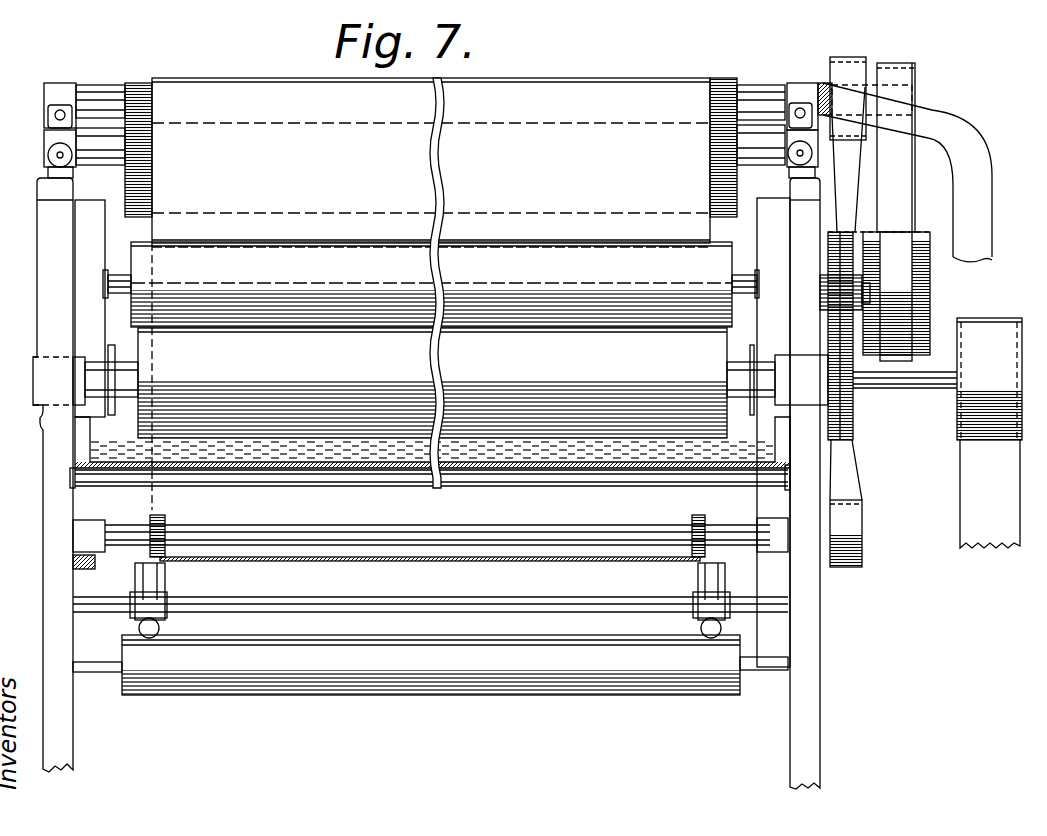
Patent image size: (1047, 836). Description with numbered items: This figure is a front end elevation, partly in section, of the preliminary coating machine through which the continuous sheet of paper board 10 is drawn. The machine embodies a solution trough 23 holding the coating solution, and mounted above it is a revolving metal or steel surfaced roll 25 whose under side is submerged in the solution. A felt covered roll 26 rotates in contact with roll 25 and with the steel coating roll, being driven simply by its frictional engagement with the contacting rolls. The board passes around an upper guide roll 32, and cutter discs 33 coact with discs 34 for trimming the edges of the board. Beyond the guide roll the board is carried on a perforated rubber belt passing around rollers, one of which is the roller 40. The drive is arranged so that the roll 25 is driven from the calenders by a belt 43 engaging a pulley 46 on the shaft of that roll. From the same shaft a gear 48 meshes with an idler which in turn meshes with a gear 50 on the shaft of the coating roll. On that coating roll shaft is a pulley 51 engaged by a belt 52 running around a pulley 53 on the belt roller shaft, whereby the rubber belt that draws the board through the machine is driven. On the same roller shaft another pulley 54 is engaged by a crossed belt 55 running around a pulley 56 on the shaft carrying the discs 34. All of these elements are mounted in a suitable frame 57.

The continuous sheet of paper board 10 is at (538, 100).
The solution trough 23 is at (272, 470).
The metal or steel surfaced roll 25 is at (450, 383).
The felt covered roll 26 is at (431, 284).
The guide roll 32 is at (718, 98).
The cutter discs 33 is at (165, 588).
The discs 34 is at (163, 515).
The roller 40 is at (746, 90).
The belt 43 is at (970, 485).
The pulley 46 is at (1022, 330).
The gear 48 is at (855, 412).
The gear 50 is at (825, 290).
The pulley 51 is at (932, 292).
The belt 52 is at (893, 203).
The pulley 53 is at (916, 80).
The pulley 54 is at (868, 62).
The crossed belt 55 is at (849, 181).
The pulley 56 is at (862, 540).
The frame 57 is at (46, 486).